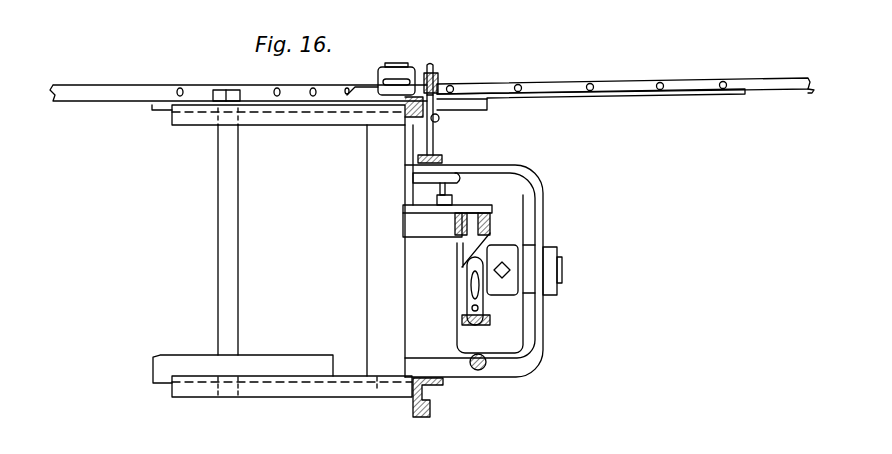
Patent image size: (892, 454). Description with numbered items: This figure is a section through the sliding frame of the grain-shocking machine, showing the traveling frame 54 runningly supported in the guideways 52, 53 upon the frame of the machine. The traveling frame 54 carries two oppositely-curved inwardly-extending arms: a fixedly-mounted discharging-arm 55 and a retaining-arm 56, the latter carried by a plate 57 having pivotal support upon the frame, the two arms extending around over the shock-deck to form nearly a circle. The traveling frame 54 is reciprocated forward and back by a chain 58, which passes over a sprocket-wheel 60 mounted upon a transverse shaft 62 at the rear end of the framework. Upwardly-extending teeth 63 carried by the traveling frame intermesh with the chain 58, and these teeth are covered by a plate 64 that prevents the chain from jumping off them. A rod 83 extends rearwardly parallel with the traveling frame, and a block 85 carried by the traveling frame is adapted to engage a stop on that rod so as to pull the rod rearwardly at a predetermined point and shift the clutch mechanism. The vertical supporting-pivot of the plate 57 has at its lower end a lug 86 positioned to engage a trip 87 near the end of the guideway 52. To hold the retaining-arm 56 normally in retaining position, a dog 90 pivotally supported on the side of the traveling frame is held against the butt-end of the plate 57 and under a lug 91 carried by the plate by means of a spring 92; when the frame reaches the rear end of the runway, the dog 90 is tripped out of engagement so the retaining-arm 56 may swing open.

The guideway 52 is at (413, 158).
The guideway 53 is at (428, 385).
The traveling frame 54 is at (370, 245).
The discharging-arm 55 is at (148, 88).
The retaining-arm 56 is at (622, 85).
The plate 57 is at (625, 97).
The chain 58 is at (487, 220).
The sprocket-wheel 60 is at (483, 305).
The transverse shaft 62 is at (563, 270).
The teeth 63 is at (472, 222).
The plate 64 is at (447, 210).
The rod 83 is at (482, 370).
The block 85 is at (470, 372).
The lug 86 is at (465, 178).
The trip 87 is at (442, 170).
The dog 90 is at (437, 130).
The lug 91 is at (370, 88).
The spring 92 is at (437, 68).